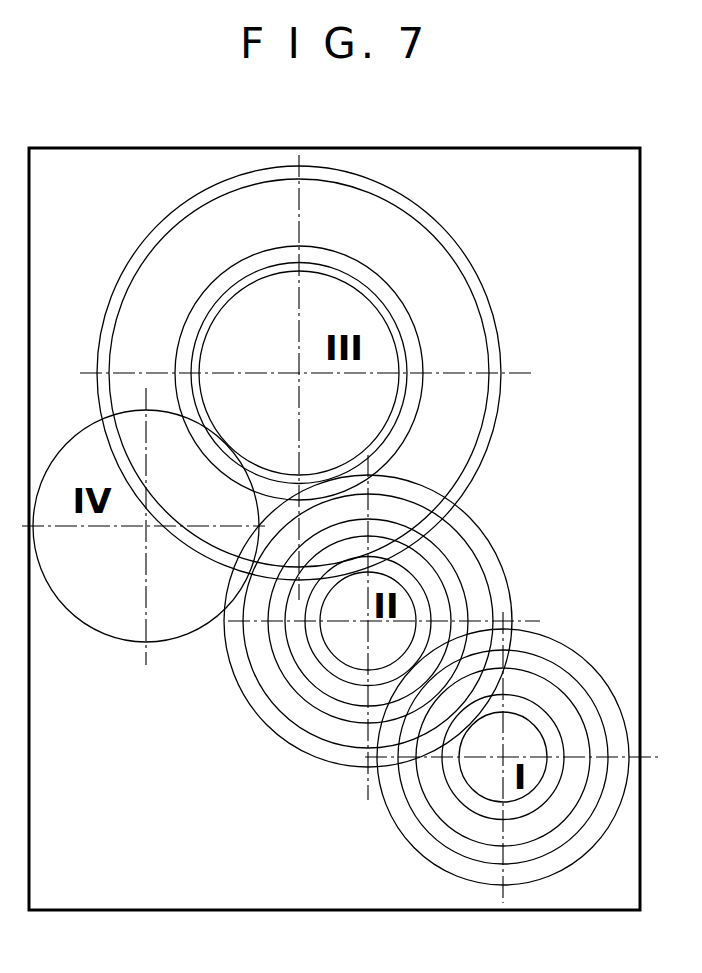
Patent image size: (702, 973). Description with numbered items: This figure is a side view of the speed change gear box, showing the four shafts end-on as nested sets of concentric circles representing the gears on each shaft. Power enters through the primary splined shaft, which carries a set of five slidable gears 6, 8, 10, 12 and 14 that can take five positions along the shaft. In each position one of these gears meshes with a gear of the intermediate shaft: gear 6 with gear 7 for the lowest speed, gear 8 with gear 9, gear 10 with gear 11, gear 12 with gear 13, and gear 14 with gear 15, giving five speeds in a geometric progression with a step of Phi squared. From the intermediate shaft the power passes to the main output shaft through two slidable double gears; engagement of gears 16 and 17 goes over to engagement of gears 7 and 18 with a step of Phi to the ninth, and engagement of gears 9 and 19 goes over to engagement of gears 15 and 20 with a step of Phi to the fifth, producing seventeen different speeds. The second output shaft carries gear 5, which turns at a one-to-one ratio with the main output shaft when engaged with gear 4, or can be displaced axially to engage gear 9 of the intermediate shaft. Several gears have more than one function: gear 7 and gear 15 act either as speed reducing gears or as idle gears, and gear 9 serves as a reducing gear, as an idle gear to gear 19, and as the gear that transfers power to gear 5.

The gear 4 is at (215, 318).
The gear 5 is at (88, 627).
The gear 6 is at (460, 768).
The gear 7 is at (285, 745).
The gear 8 is at (542, 710).
The gear 9 is at (243, 657).
The gear 10 is at (428, 815).
The gear 11 is at (280, 668).
The gear 12 is at (450, 848).
The gear 13 is at (438, 572).
The gear 14 is at (573, 862).
The gear 15 is at (437, 612).
The gear 16 is at (349, 667).
The gear 17 is at (497, 322).
The gear 18 is at (418, 328).
The gear 19 is at (403, 403).
The gear 20 is at (483, 413).